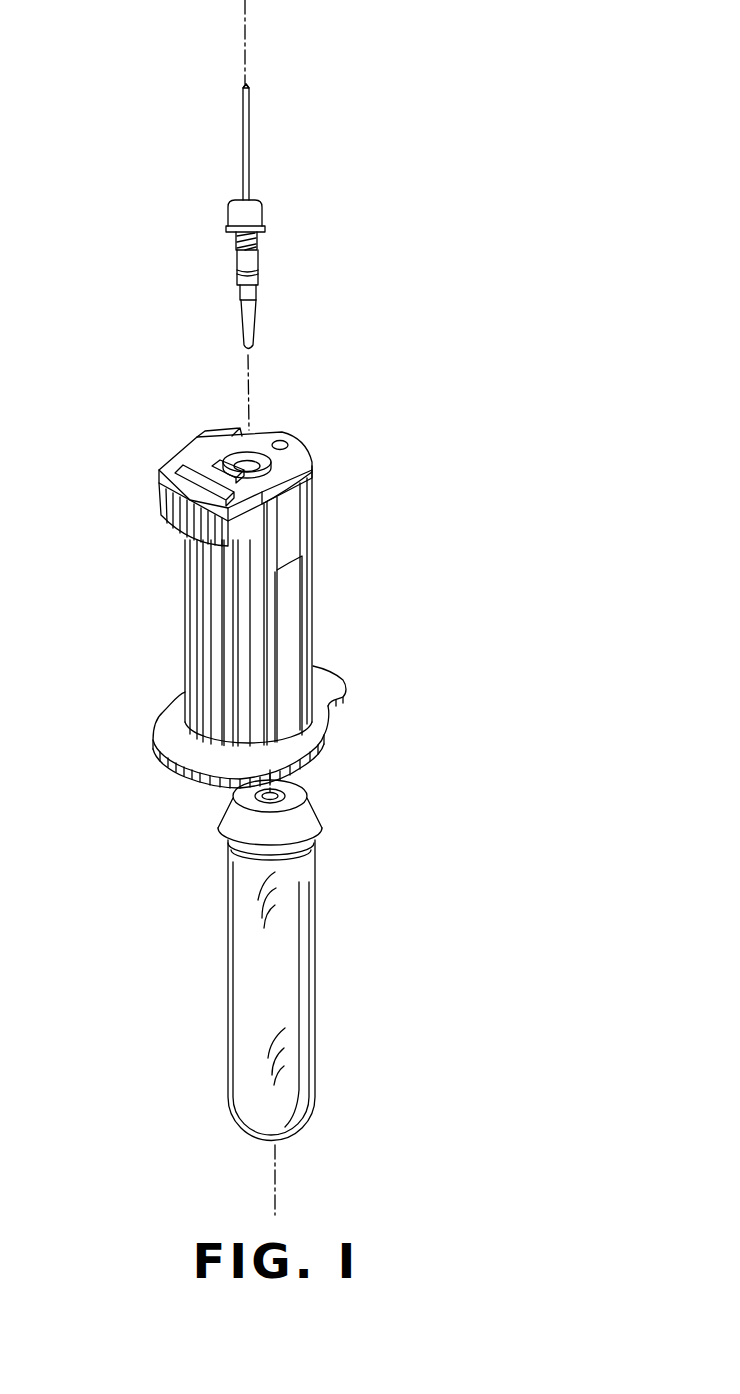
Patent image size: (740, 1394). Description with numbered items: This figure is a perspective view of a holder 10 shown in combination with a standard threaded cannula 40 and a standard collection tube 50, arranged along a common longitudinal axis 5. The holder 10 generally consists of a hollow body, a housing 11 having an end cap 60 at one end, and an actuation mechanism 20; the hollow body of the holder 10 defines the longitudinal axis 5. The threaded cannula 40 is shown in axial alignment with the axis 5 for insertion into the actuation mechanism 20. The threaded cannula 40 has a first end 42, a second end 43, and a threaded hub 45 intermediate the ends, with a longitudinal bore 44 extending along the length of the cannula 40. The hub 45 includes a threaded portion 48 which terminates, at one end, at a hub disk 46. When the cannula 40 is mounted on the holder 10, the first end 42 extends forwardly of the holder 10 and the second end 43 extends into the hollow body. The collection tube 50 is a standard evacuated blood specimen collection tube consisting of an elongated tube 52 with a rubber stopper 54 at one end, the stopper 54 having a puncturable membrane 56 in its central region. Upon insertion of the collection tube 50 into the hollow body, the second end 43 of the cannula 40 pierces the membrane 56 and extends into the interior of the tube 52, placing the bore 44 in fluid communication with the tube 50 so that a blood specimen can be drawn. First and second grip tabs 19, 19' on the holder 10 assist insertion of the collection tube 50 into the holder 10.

The longitudinal axis 5 is at (275, 1197).
The holder 10 is at (267, 575).
The housing 11 is at (319, 600).
The first grip tab 19 is at (203, 750).
The second grip tab 19' is at (378, 697).
The actuation mechanism 20 is at (207, 455).
The threaded cannula 40 is at (243, 185).
The first end 42 is at (293, 110).
The second end 43 is at (256, 314).
The longitudinal bore 44 is at (246, 84).
The threaded hub 45 is at (270, 245).
The hub disk 46 is at (262, 230).
The threaded portion 48 is at (237, 246).
The collection tube 50 is at (263, 960).
The elongated tube 52 is at (228, 1021).
The rubber stopper 54 is at (272, 828).
The puncturable membrane 56 is at (284, 792).
The end cap 60 is at (268, 411).